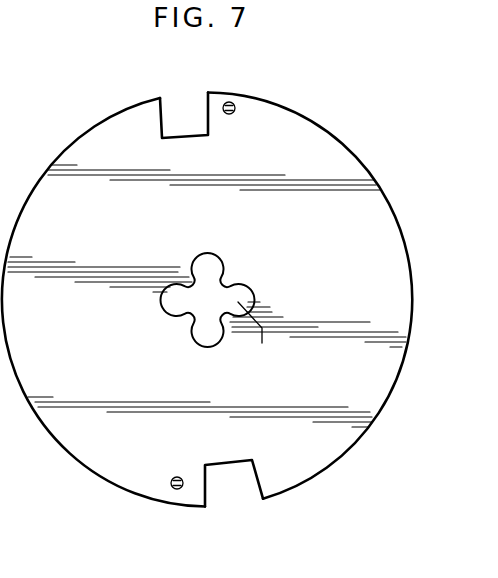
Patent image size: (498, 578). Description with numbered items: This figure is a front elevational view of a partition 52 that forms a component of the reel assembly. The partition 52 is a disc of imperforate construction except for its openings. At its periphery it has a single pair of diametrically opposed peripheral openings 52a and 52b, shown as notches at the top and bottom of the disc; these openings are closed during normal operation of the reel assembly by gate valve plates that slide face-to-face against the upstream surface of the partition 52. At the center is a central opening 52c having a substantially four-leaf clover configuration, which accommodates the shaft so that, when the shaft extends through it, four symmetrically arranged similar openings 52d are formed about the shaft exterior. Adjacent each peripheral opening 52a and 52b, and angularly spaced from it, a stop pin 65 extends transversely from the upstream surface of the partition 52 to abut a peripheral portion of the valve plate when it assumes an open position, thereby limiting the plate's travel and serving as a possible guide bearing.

The partition 52 is at (110, 146).
The peripheral opening 52a is at (182, 122).
The peripheral opening 52b is at (227, 493).
The central opening 52c is at (212, 293).
The openings 52d is at (210, 338).
The stop pin 65 is at (232, 114).